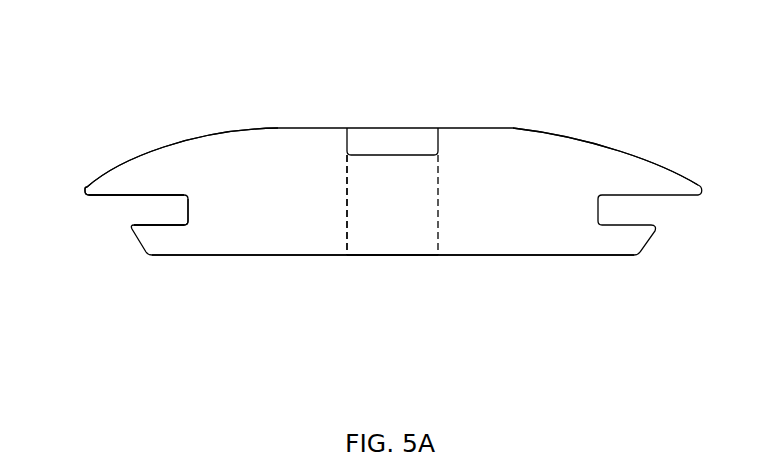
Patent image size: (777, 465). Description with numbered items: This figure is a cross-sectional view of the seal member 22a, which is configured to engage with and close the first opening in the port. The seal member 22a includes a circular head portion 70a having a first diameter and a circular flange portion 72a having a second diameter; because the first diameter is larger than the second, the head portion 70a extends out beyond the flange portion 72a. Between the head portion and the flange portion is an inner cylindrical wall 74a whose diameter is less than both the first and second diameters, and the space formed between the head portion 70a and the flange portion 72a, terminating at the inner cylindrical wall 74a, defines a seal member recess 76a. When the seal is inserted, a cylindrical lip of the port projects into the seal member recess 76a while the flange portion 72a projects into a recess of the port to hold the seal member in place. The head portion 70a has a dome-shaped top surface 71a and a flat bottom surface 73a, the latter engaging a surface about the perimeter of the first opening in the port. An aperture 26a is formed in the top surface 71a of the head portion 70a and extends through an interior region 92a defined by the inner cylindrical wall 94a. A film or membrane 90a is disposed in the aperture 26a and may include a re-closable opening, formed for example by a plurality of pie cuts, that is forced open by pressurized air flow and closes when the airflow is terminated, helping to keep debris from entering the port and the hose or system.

The seal member 22a is at (365, 66).
The aperture 26a is at (392, 128).
The head portion 70a is at (660, 151).
The top surface 71a is at (172, 145).
The flange portion 72a is at (625, 283).
The flat bottom surface 73a is at (85, 196).
The inner cylindrical wall 74a is at (189, 214).
The seal member recess 76a is at (122, 216).
The film or membrane 90a is at (413, 157).
The interior region 92a is at (398, 252).
The inner cylindrical wall 94a is at (344, 237).